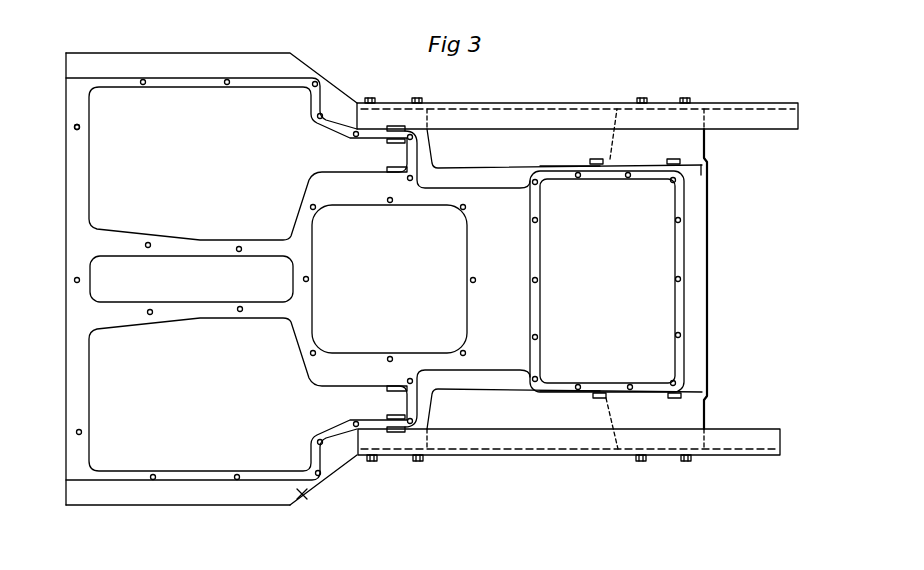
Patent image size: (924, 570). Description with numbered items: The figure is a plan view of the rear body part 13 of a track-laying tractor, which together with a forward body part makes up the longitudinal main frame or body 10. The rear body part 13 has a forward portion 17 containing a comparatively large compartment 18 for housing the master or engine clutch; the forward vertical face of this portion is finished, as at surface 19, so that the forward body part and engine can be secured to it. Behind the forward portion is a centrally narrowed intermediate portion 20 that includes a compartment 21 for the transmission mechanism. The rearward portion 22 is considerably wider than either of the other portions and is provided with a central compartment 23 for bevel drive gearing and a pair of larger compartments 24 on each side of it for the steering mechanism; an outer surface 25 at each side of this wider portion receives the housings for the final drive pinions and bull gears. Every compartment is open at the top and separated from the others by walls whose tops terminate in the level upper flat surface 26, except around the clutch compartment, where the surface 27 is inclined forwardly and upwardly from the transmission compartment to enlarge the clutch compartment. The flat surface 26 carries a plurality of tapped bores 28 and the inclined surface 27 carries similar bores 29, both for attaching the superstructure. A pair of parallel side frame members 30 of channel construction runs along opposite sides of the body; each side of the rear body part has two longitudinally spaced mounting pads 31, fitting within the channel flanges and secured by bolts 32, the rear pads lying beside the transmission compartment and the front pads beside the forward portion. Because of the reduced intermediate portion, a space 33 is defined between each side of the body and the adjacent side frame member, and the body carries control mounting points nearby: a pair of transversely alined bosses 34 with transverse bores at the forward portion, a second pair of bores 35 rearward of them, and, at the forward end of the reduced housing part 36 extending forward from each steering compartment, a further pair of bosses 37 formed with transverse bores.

The longitudinal main frame or body 10 is at (63, 524).
The rear body part 13 is at (302, 494).
The forward portion 17 is at (705, 248).
The compartment 18 is at (607, 281).
The finished forward vertical surface 19 is at (708, 297).
The intermediate portion 20 is at (508, 348).
The compartment 21 is at (393, 280).
The rearward portion 22 is at (143, 485).
The central compartment 23 is at (199, 279).
The larger compartments 24 is at (248, 279).
The outer surface 25 is at (222, 70).
The upper flat surface 26 is at (80, 390).
The inclined surface 27 is at (678, 344).
The tapped bores 28 is at (66, 190).
The bores 29 is at (682, 218).
The side frame members 30 is at (507, 103).
The mounting pads 31 is at (427, 405).
The bolts 32 is at (685, 98).
The space 33 is at (563, 143).
The bosses 34 is at (677, 158).
The bores 35 is at (597, 157).
The reduced housing part 36 is at (378, 158).
The bosses 37 is at (396, 126).